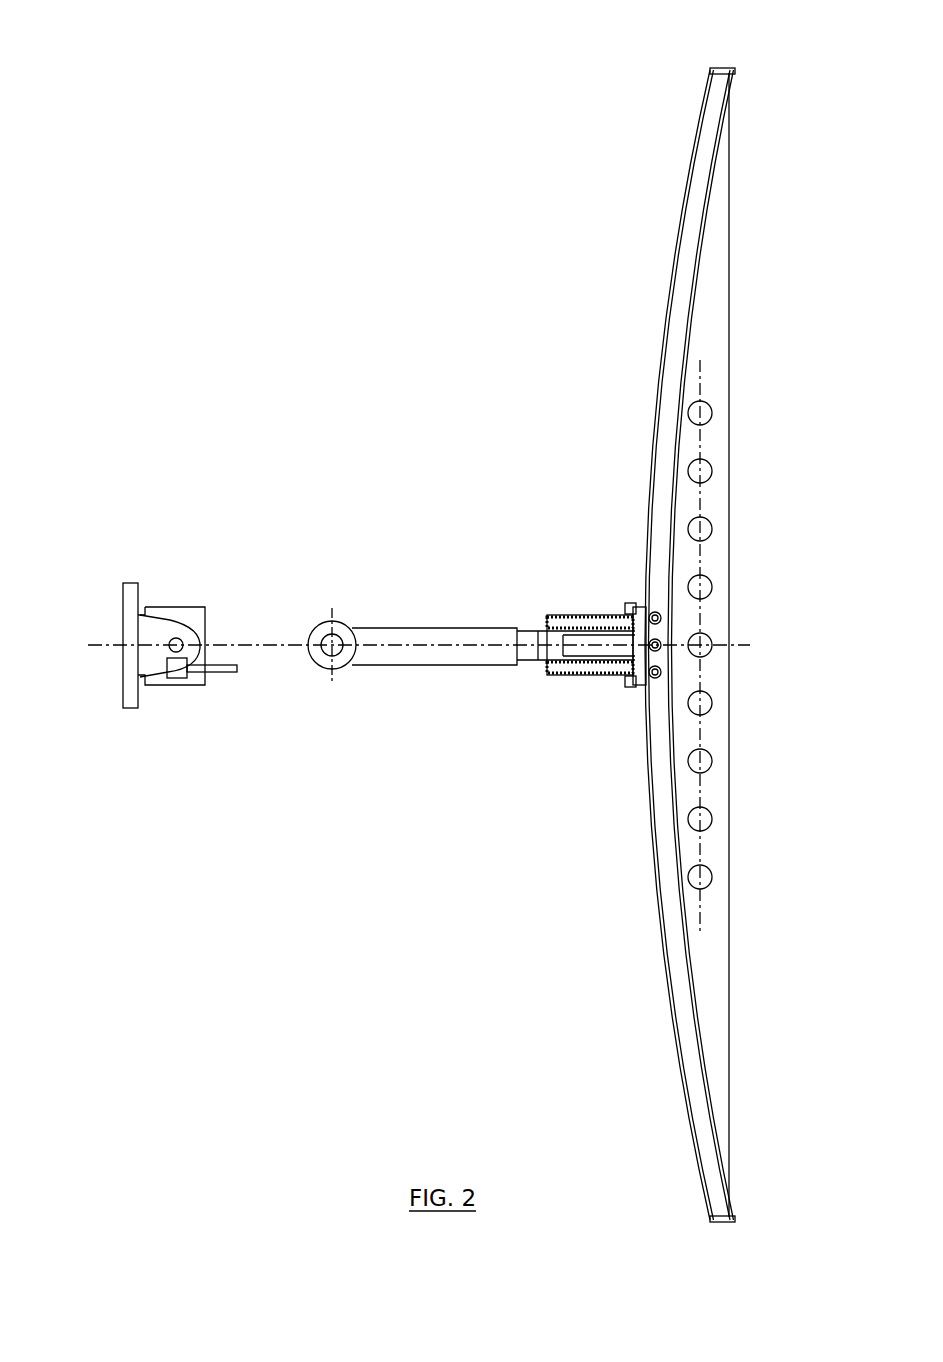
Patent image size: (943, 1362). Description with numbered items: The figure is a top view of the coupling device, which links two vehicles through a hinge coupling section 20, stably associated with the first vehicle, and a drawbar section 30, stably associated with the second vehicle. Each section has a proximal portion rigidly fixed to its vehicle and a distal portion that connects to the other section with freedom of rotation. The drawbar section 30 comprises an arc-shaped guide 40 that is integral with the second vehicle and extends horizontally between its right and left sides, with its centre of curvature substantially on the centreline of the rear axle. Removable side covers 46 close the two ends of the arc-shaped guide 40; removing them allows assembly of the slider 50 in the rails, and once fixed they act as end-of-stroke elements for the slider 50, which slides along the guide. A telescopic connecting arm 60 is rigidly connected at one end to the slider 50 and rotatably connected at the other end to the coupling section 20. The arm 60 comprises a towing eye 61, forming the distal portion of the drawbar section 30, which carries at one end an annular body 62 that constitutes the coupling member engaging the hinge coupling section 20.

The hinge coupling section 20 is at (172, 518).
The drawbar section 30 is at (477, 442).
The arc-shaped guide 40 is at (650, 356).
The removable side covers 46 is at (713, 69).
The slider 50 is at (627, 589).
The telescopic connecting arm 60 is at (461, 654).
The towing eye 61 is at (402, 638).
The annular body 62 is at (330, 621).